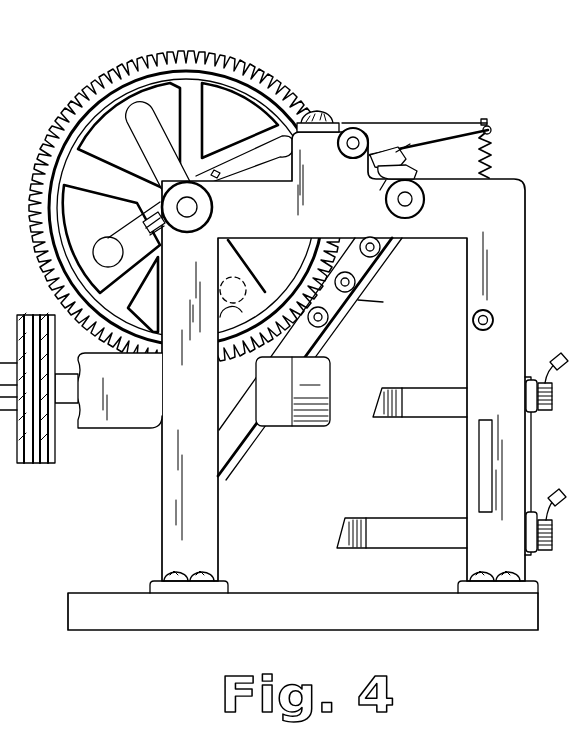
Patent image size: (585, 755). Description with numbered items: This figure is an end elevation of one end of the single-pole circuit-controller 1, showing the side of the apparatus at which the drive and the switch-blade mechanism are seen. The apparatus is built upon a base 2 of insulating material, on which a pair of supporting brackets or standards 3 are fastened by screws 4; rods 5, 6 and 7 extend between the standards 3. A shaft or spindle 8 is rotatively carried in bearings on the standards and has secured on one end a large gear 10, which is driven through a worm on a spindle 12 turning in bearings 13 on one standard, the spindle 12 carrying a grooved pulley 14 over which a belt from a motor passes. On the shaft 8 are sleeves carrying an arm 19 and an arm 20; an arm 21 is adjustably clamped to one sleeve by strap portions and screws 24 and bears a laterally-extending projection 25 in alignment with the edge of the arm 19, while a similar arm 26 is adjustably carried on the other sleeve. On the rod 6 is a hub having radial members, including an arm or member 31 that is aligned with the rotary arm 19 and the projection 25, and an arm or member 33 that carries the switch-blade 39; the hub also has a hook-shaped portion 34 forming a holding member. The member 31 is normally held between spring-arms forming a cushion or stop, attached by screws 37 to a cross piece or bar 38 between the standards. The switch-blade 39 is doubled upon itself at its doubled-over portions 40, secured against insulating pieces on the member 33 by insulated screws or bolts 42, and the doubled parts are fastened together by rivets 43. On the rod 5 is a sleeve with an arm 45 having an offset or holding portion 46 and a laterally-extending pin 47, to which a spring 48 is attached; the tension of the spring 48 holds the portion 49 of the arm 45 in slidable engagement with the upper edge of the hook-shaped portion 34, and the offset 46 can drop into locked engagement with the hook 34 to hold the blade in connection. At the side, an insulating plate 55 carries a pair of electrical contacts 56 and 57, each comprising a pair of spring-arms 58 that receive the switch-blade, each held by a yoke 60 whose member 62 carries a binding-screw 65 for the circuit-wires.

The single-pole circuit-controller 1 is at (334, 356).
The base 2 is at (432, 617).
The supporting brackets or standards 3 is at (540, 270).
The screws 4 is at (486, 572).
The rod 5 is at (356, 138).
The rod 6 is at (412, 199).
The rod 7 is at (472, 320).
The shaft or spindle 8 is at (198, 207).
The gear 10 is at (264, 86).
The spindle 12 is at (62, 418).
The bearings 13 is at (333, 368).
The pulley 14 is at (50, 465).
The arm 19 is at (245, 159).
The arm 20 is at (163, 157).
The arm 21 is at (120, 233).
The screws 24 is at (147, 214).
The laterally-extending projection 25 is at (106, 252).
The arm 26 is at (238, 263).
The arm or member 31 is at (373, 199).
The arm or member 33 is at (387, 308).
The hook-shaped portion 34 is at (420, 167).
The screws 37 is at (318, 110).
The cross piece or bar 38 is at (336, 122).
The switch-blade 39 is at (239, 448).
The doubled-over portions 40 is at (248, 438).
The insulated screws or bolts 42 is at (332, 322).
The rivets 43 is at (268, 380).
The arm 45 is at (449, 128).
The offset or holding portion 46 is at (409, 154).
The laterally-extending pin 47 is at (489, 124).
The spring 48 is at (494, 160).
The portion of arm 49 is at (407, 153).
The plate, bar, block or device 55 is at (532, 456).
The electrical contact 56 is at (373, 398).
The electrical contact 57 is at (339, 520).
The spring-arms 58 is at (426, 525).
The yoke 60 is at (530, 552).
The member of yoke 62 is at (535, 518).
The binding-screw 65 is at (547, 547).